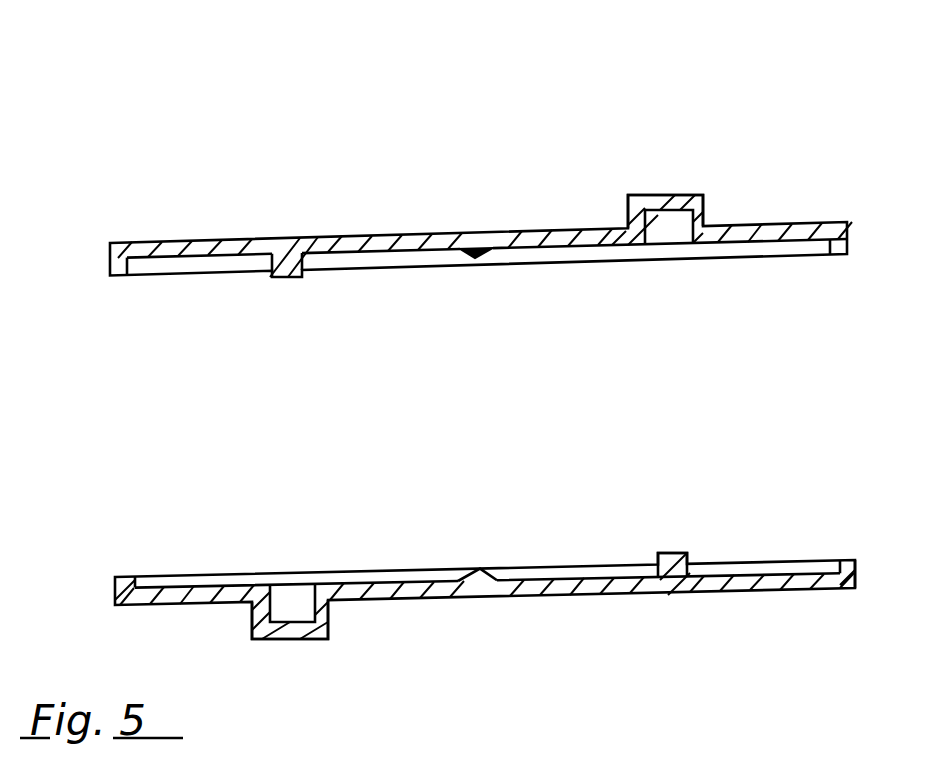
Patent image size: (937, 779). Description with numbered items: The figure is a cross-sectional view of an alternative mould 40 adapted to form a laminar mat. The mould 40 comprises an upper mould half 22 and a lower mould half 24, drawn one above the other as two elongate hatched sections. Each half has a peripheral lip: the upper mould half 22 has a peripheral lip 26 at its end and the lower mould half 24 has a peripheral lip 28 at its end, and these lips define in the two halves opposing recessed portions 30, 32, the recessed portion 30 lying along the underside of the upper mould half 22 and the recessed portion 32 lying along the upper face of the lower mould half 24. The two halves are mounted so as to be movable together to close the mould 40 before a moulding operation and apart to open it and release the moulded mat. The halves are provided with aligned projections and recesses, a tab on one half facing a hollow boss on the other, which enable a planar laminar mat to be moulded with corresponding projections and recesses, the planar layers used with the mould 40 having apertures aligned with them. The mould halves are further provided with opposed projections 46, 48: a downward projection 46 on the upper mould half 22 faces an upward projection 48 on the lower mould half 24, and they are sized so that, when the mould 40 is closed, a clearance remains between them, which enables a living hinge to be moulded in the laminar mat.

The upper mould half 22 is at (220, 237).
The lower mould half 24 is at (517, 595).
The peripheral lip 26 is at (113, 277).
The peripheral lip 28 is at (842, 562).
The recessed portion 30 is at (385, 257).
The recessed portion 32 is at (403, 577).
The mould 40 is at (435, 92).
The opposed projection 46 is at (475, 263).
The opposed projection 48 is at (480, 568).